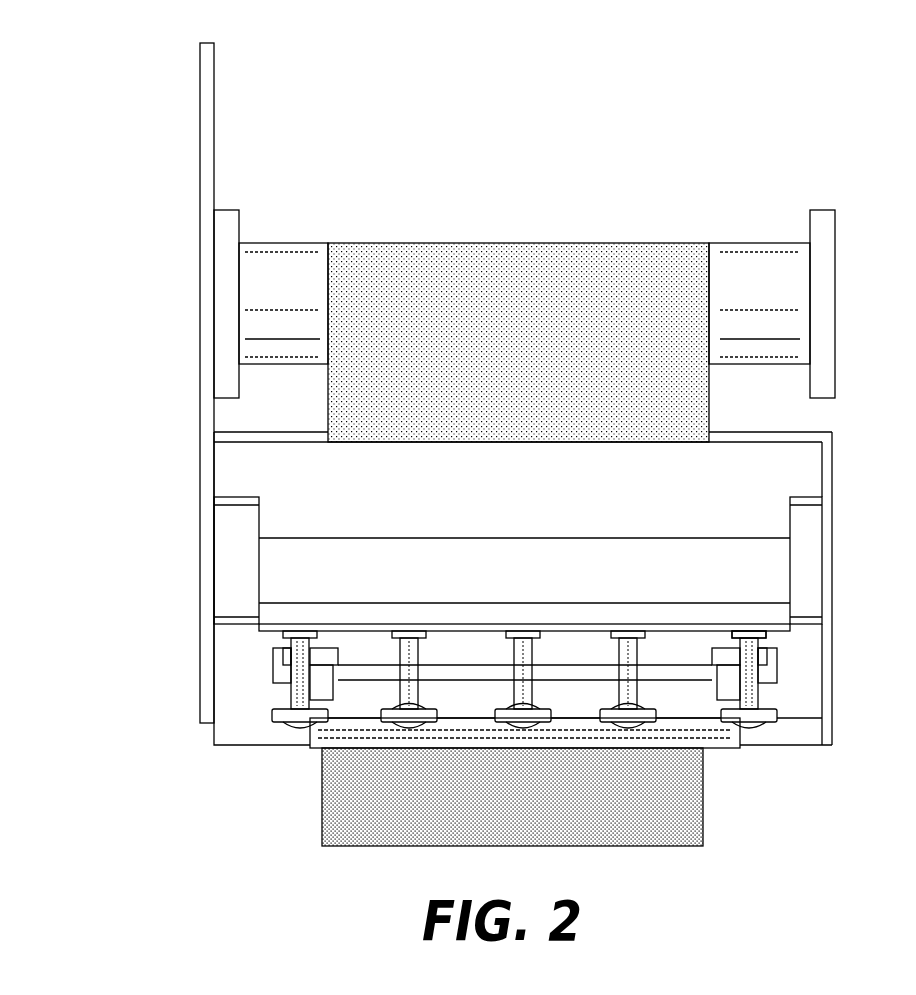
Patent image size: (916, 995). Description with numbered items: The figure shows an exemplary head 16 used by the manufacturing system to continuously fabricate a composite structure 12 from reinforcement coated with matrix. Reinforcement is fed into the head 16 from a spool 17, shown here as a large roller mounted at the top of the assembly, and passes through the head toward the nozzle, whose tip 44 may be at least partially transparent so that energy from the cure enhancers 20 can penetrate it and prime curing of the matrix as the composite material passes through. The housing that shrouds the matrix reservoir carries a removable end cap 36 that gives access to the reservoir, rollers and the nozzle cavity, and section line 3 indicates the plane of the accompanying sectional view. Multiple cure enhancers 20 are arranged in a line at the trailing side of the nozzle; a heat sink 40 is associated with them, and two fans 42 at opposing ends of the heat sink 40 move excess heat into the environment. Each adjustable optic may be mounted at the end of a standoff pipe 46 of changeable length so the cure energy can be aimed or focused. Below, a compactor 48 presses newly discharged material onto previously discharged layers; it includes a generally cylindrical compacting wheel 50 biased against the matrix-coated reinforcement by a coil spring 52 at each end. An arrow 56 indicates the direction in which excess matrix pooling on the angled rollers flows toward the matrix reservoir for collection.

The section line 3- 3 is at (865, 243).
The composite structure 12 is at (512, 797).
The head 16 is at (335, 883).
The spool 17 is at (835, 360).
The cure enhancer 20 is at (317, 636).
The end cap 36 is at (832, 478).
The heat sink 40 is at (533, 552).
The fan 42 is at (259, 517).
The tip 44 is at (270, 715).
The standoff pipe 46 is at (290, 683).
The compactor 48 is at (247, 777).
The compacting wheel 50 is at (318, 752).
The spring 52 is at (730, 635).
The arrow 56 is at (283, 633).